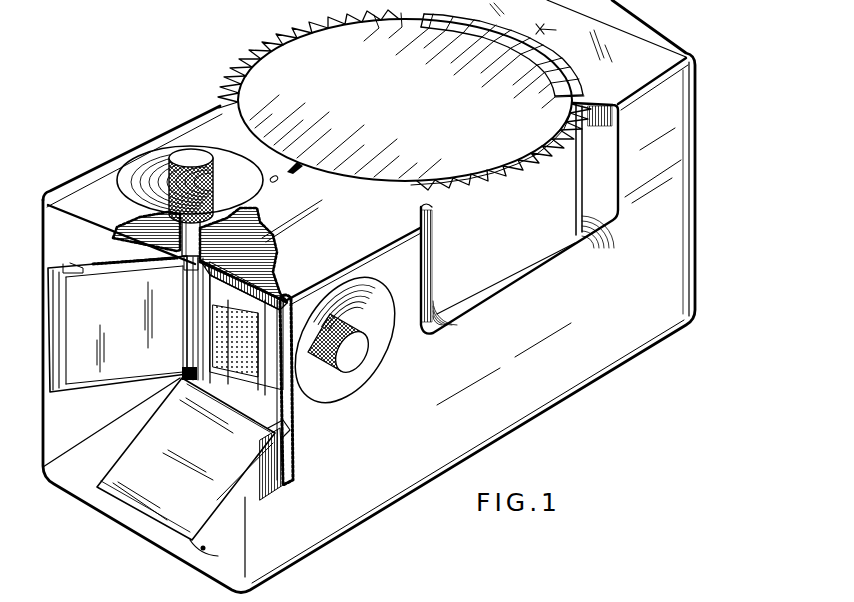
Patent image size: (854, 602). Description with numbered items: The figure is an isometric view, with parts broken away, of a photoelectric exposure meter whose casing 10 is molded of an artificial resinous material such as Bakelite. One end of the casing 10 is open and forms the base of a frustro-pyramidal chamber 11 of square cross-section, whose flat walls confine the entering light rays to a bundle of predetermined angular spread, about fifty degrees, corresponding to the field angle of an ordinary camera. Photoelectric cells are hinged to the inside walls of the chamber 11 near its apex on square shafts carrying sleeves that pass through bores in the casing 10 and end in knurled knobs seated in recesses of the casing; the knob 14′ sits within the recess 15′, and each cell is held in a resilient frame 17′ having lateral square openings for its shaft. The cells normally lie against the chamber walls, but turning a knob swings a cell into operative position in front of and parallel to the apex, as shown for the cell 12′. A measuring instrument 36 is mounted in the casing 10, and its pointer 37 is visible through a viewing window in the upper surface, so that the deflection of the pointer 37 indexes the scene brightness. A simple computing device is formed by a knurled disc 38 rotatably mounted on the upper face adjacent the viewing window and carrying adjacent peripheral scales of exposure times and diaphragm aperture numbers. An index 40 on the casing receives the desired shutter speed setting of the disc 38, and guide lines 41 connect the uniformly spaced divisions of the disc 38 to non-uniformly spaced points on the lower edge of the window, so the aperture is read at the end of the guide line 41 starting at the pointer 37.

The casing 10 is at (316, 536).
The frustro-pyramidal chamber 11 is at (98, 417).
The photoelectric cell 12′ is at (250, 347).
The knurled knob 14′ is at (366, 346).
The recess 15′ is at (350, 374).
The resilient frame 17′ is at (285, 297).
The measuring instrument 36 is at (500, 290).
The pointer 37 is at (555, 29).
The knurled disc 38 is at (320, 44).
The index 40 is at (295, 172).
The guide lines 41 is at (440, 14).